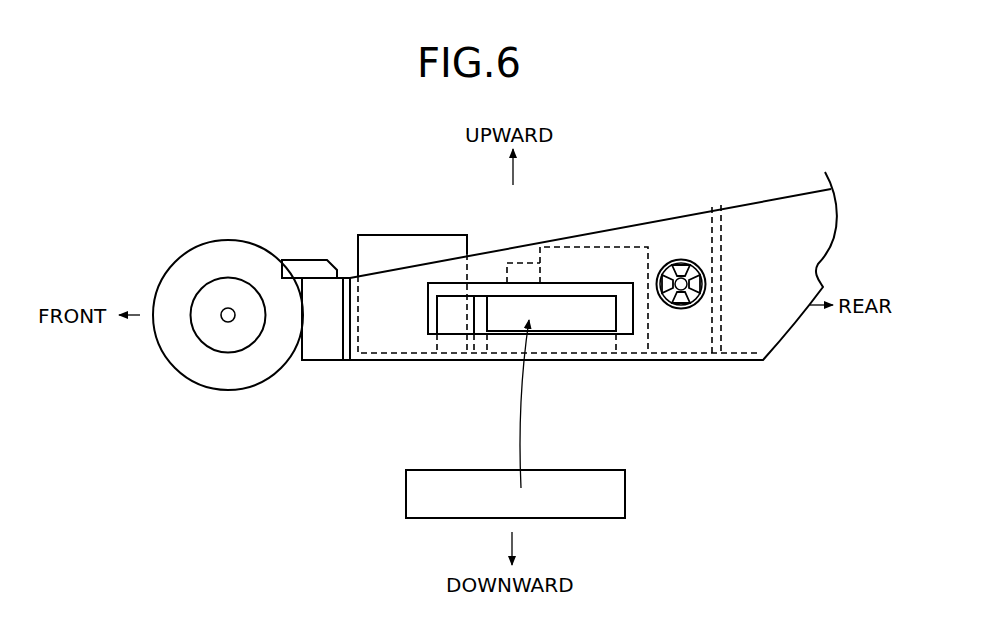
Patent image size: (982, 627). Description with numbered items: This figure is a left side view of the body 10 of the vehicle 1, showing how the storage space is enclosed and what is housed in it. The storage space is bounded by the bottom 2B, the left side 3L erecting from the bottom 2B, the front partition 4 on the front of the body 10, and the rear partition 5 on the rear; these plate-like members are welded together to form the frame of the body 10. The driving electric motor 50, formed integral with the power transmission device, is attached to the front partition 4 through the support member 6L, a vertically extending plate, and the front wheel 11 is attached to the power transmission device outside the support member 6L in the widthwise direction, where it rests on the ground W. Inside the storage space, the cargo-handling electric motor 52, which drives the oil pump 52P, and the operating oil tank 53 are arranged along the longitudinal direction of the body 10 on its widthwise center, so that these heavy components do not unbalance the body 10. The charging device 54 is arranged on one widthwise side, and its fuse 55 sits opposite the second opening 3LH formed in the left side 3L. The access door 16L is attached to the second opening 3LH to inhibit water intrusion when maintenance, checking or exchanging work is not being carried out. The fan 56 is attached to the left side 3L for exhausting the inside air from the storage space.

The vehicle 1 is at (252, 163).
The body 10 is at (779, 340).
The front wheel 11 is at (237, 378).
The workpiece / sheet W is at (331, 240).
The driving electric motor 50 is at (301, 268).
The front partition 4 is at (347, 276).
The support member 6L is at (330, 350).
The bottom 2B is at (388, 361).
The operating oil tank 53 is at (384, 242).
The left side 3L is at (483, 260).
The oil pump 52P is at (522, 263).
The cargo-handling electric motor 52 is at (584, 253).
The charging device 54 is at (593, 322).
The fuse 55 is at (452, 322).
The second opening 3LH is at (483, 322).
The access door 16L is at (575, 470).
The fan 56 is at (678, 304).
The rear partition 5 is at (728, 225).